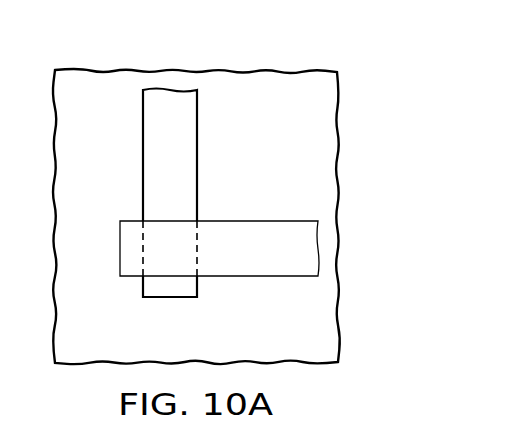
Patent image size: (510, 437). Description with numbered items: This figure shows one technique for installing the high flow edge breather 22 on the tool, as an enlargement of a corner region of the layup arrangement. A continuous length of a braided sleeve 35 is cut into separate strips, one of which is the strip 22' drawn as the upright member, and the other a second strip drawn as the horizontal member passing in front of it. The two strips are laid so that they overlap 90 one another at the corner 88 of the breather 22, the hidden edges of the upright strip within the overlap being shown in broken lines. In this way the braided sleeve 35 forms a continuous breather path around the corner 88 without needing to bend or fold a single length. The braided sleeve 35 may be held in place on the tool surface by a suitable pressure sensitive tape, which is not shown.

The breather 22 is at (196, 216).
The strip 22' is at (141, 193).
The braided sleeve 35 is at (141, 193).
The corner 88 is at (195, 217).
The overlap 90 is at (178, 235).